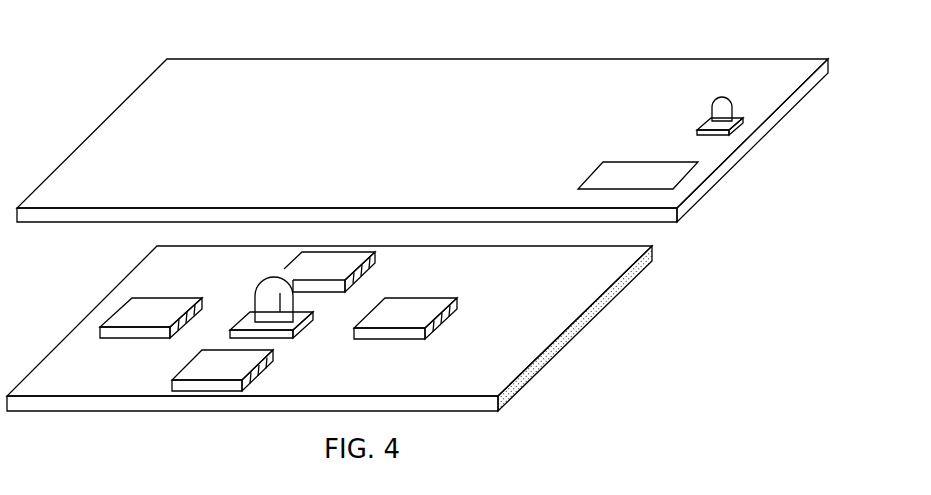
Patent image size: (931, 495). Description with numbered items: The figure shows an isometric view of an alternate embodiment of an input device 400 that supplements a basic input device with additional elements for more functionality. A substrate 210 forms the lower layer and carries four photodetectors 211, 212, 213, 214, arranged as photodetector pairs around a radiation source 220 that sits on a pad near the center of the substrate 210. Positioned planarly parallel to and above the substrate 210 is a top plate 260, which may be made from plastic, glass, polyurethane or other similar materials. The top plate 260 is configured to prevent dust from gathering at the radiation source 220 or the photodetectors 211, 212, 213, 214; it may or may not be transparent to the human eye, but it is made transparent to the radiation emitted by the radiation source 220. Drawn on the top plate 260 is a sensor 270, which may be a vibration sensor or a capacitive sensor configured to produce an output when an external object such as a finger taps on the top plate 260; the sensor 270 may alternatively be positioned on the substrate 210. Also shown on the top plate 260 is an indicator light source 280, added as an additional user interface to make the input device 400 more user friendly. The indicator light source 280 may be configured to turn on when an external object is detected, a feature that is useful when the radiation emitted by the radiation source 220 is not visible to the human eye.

The input device 400 is at (29, 48).
The top plate 260 is at (361, 126).
The sensor 270 is at (626, 182).
The indicator light source 280 is at (720, 107).
The substrate 210 is at (104, 392).
The photodetector 211 is at (163, 318).
The photodetector 212 is at (396, 320).
The photodetector 213 is at (212, 370).
The photodetector 214 is at (313, 273).
The radiation source 220 is at (270, 283).